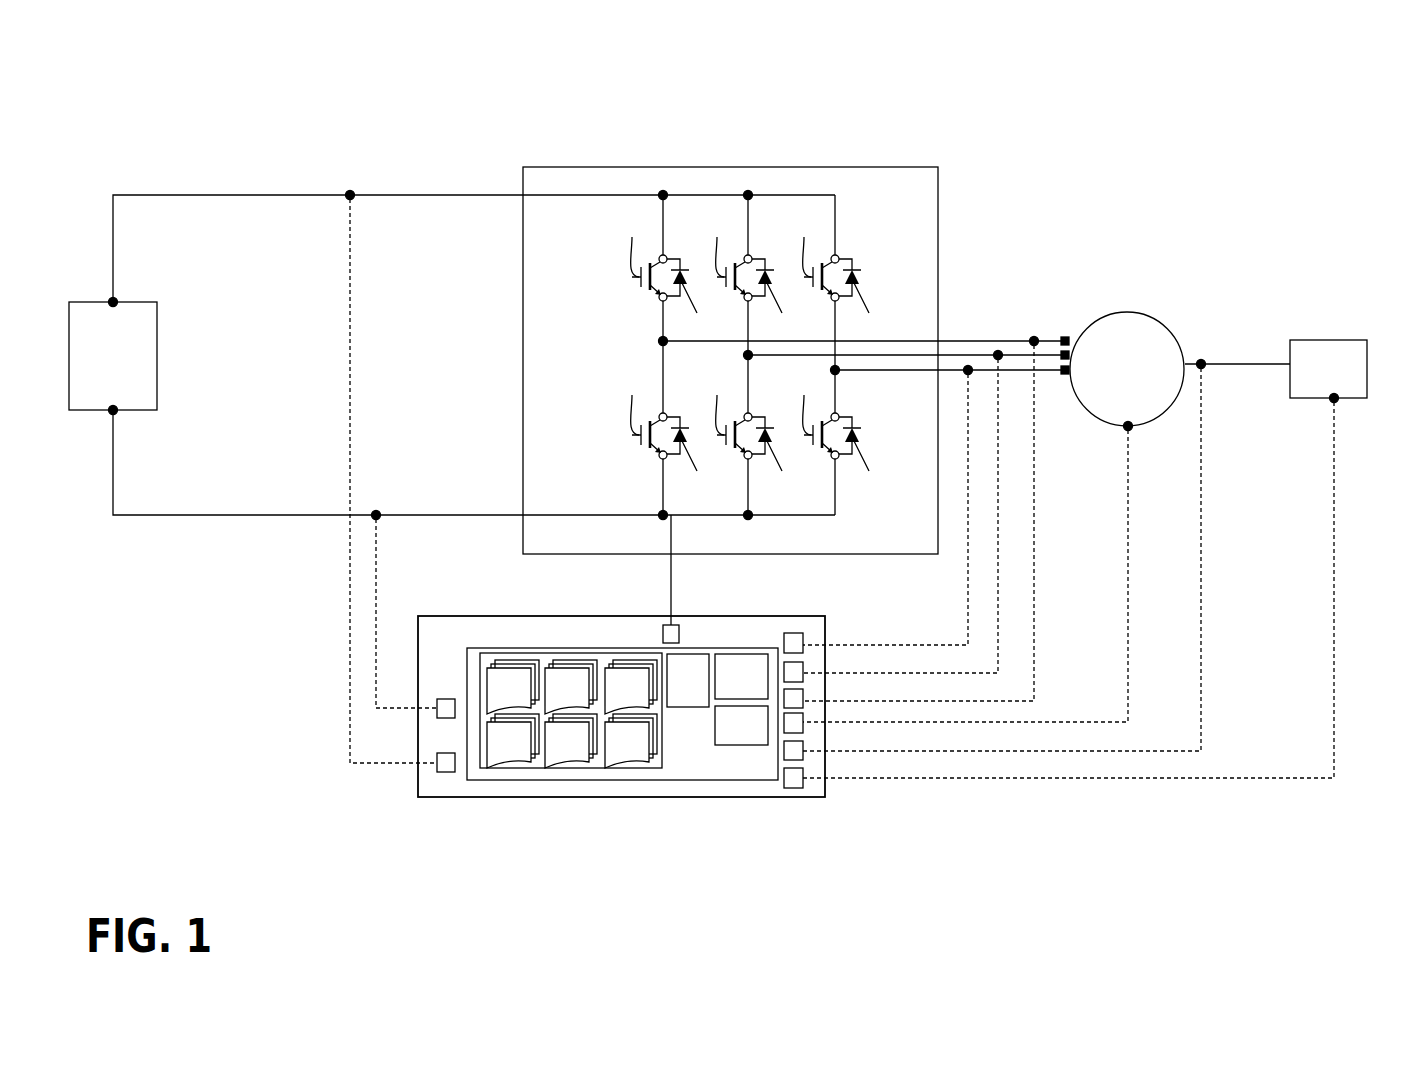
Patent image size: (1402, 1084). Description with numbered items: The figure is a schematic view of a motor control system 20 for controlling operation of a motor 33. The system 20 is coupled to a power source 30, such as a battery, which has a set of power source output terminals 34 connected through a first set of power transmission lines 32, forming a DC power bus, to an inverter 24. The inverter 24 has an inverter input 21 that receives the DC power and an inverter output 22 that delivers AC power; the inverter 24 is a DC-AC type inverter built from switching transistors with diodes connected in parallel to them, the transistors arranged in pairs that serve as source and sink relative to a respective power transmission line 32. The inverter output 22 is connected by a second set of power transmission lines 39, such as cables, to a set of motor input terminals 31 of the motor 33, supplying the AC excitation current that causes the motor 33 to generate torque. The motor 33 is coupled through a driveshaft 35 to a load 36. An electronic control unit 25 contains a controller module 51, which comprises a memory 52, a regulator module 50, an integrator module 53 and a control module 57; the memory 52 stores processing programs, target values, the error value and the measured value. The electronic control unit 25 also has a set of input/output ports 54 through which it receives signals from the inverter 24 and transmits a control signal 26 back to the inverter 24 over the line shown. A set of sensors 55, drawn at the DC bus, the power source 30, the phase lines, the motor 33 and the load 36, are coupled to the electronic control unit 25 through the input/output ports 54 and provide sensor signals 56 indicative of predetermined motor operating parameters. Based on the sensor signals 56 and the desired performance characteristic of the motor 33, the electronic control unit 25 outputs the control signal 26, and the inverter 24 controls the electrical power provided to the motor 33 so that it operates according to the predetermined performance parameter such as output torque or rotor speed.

The motor control system 20 is at (320, 110).
The inverter input 21 is at (492, 293).
The inverter output 22 is at (965, 321).
The inverter 24 is at (579, 160).
The electronic control unit 25 is at (798, 609).
The control signal 26 is at (676, 579).
The power source 30 is at (113, 356).
The motor input terminals 31 is at (1068, 340).
The first set of power transmission lines 32 is at (283, 194).
The motor 33 is at (1127, 369).
The power source output terminals 34 is at (115, 300).
The driveshaft 35 is at (1218, 363).
The load 36 is at (1328, 369).
The second set of power transmission lines 39 is at (917, 354).
The regulator module 50 is at (688, 680).
The controller module 51 is at (579, 640).
The memory 52 is at (660, 712).
The integrator module 53 is at (741, 676).
The input/output ports 54 is at (656, 628).
The sensors 55 is at (351, 193).
The sensor signals 56 is at (353, 433).
The control module 57 is at (741, 725).